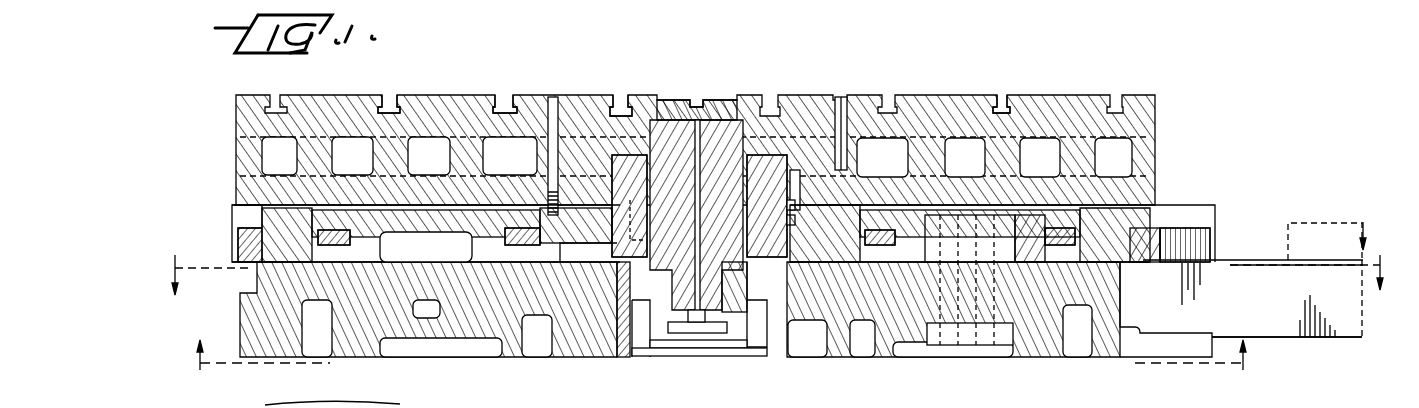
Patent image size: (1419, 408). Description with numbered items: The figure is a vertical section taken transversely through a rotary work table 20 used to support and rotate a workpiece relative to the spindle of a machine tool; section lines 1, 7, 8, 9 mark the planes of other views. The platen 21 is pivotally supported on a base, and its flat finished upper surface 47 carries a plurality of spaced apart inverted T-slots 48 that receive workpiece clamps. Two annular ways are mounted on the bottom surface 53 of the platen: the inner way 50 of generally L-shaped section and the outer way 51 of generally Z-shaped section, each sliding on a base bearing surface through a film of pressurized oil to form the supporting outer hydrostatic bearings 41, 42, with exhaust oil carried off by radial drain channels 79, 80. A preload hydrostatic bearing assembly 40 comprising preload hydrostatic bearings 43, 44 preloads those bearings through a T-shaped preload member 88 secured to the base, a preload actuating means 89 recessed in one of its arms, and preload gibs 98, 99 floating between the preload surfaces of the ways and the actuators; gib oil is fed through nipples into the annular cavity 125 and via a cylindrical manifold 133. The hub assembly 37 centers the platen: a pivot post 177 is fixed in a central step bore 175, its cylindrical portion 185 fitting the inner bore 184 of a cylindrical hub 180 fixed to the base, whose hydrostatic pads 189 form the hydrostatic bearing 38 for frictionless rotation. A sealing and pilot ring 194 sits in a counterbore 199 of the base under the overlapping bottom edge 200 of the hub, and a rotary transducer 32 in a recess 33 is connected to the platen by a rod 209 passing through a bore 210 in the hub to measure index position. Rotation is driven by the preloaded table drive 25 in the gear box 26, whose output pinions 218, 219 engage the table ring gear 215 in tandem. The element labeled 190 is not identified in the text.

The section line 1 is at (254, 364).
The section line 7 is at (1198, 361).
The section line 8 is at (1310, 262).
The section line 9 is at (769, 246).
The rotary work table 20 is at (1160, 100).
The platen 21 is at (1055, 70).
The preloaded table drive 25 is at (1348, 325).
The gear box 26 is at (1290, 340).
The rotary transducer 32 is at (682, 356).
The recess 33 is at (735, 330).
The hub assembly 37 is at (740, 135).
The hydrostatic bearing 38 is at (700, 190).
The preload hydrostatic bearing assembly 40 is at (315, 213).
The supporting outer hydrostatic bearing 41 is at (585, 274).
The supporting outer hydrostatic bearing 42 is at (310, 264).
The preload hydrostatic bearing 43 is at (880, 232).
The preload hydrostatic bearing 44 is at (1032, 228).
The upper surface 47 is at (433, 95).
The inverted T-slot 48 is at (504, 96).
The inner way 50 is at (560, 222).
The outer way 51 is at (240, 207).
The bottom surface 53 is at (388, 212).
The radial drain channel 79 is at (482, 270).
The radial drain channel 80 is at (338, 268).
The preload member 88 is at (488, 215).
The preload actuating means 89 is at (870, 228).
The preload gib 98 is at (522, 248).
The preload gib 99 is at (337, 248).
The annular cavity 125 is at (428, 250).
The cylindrical manifold 133 is at (968, 232).
The step bore 175 is at (640, 130).
The pivot post 177 is at (748, 133).
The cylindrical hub 180 is at (772, 188).
The inner bore 184 is at (767, 206).
The cylindrical portion 185 is at (756, 240).
The hydrostatic pad 189 is at (775, 178).
The passage 190 is at (652, 205).
The sealing and pilot ring 194 is at (648, 270).
The counterbore 199 is at (740, 290).
The bottom edge 200 is at (745, 270).
The rod 209 is at (705, 190).
The bore 210 is at (700, 205).
The table ring gear 215 is at (1150, 268).
The output pinion 218 is at (1178, 232).
The output pinion 219 is at (1208, 216).